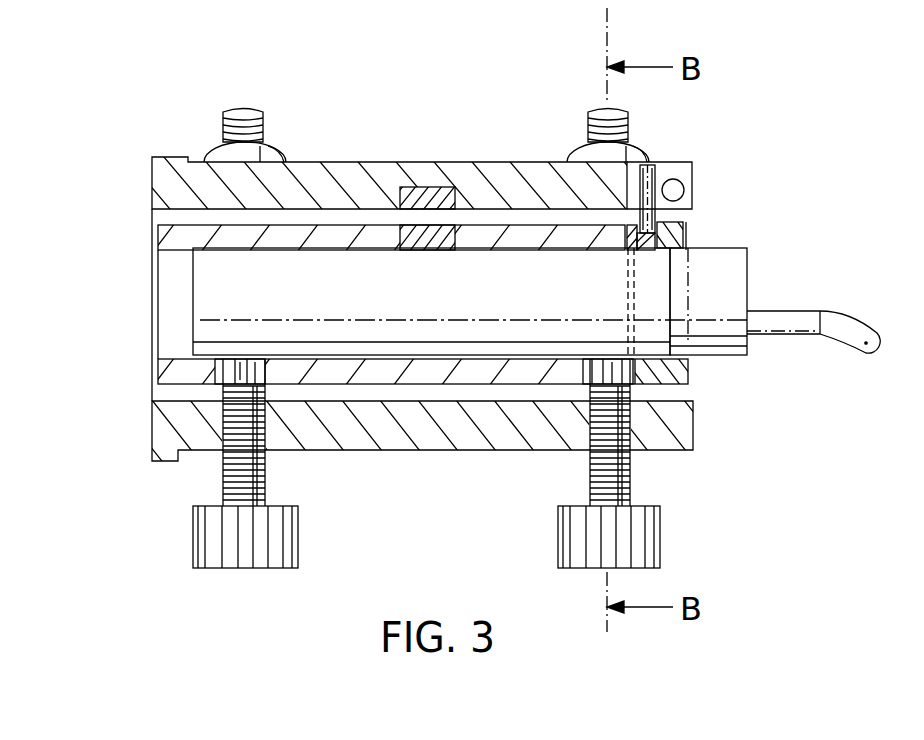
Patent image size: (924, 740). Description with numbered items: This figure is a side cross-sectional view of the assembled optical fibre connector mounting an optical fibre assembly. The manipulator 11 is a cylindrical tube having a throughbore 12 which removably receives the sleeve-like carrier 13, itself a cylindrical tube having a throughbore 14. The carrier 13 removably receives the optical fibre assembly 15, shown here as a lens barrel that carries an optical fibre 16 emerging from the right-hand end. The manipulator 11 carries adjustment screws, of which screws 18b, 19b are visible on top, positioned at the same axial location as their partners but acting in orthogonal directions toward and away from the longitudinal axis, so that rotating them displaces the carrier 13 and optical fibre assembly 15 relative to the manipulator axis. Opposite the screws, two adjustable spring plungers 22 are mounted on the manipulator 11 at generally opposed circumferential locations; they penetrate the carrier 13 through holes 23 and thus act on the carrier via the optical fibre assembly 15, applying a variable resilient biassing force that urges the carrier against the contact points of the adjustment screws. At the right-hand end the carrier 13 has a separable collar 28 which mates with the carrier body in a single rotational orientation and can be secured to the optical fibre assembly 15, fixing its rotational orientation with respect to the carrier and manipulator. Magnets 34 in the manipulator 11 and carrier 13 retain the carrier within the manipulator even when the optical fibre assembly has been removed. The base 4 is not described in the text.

The base plate 4 is at (693, 450).
The manipulator 11 is at (330, 161).
The throughbore 12 is at (683, 213).
The carrier 13 is at (360, 386).
The throughbore 14 is at (173, 293).
The optical fibre assembly 15 is at (443, 343).
The optical fibre 16 is at (858, 345).
The adjustment screw 18b is at (594, 108).
The adjustment screw 19b is at (234, 108).
The adjustable spring plunger 22 is at (203, 537).
The hole 23 is at (228, 366).
The separable collar 28 is at (663, 273).
The magnet 34 is at (437, 185).